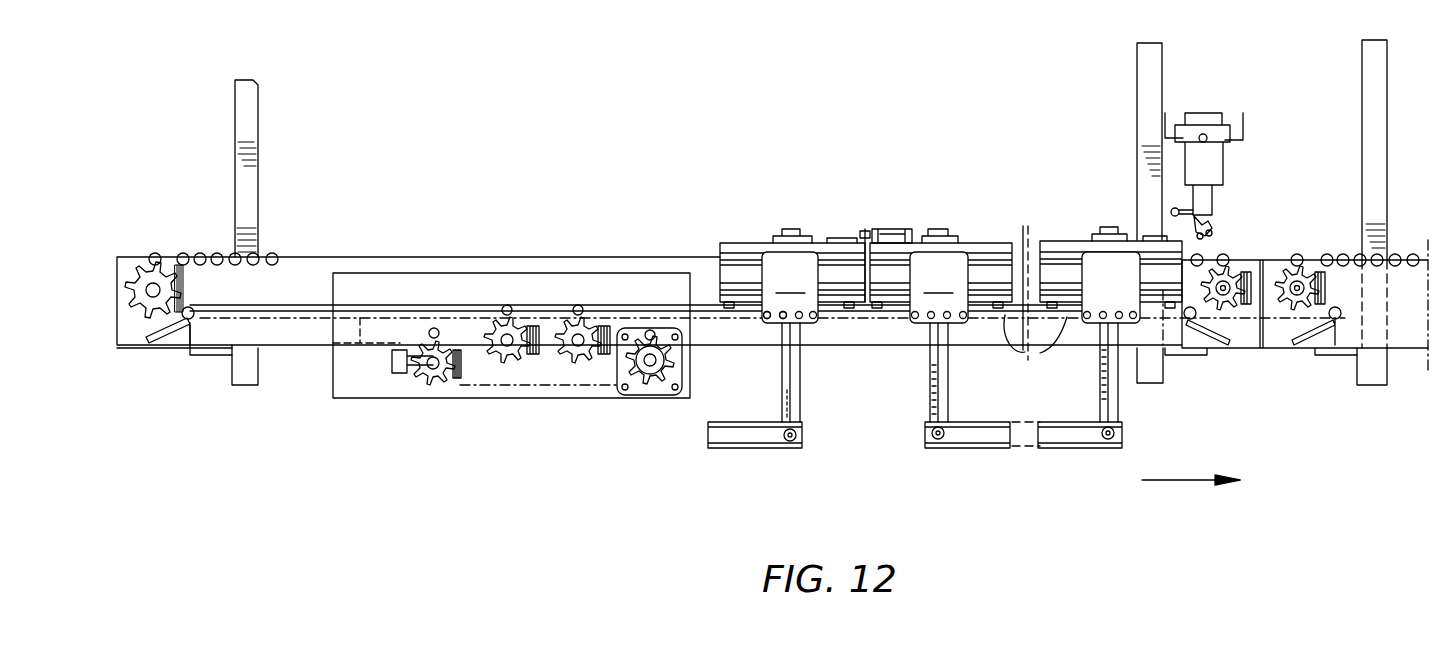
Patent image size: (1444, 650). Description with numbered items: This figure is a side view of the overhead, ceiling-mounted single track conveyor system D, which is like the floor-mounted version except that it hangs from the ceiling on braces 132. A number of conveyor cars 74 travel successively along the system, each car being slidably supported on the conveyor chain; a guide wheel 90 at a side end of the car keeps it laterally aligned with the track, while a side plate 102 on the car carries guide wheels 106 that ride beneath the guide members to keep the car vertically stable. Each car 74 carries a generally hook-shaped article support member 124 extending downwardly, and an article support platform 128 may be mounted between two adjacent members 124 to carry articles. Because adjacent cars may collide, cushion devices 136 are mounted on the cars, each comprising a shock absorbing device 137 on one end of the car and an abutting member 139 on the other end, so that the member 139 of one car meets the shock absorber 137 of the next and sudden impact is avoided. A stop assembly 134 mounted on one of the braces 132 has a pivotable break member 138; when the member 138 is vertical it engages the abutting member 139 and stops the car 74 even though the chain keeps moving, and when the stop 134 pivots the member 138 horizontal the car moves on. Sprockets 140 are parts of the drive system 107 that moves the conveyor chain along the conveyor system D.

The conveyor car 74 is at (823, 243).
The guide wheel 90 is at (1035, 302).
The side plate 102 is at (951, 287).
The guide wheel 106 is at (778, 322).
The drive mechanism 107 is at (365, 400).
The article support member 124 is at (800, 390).
The article support platform 128 is at (1000, 450).
The brace 132 is at (258, 152).
The stop assembly 134 is at (1252, 157).
The cushion device 136 is at (945, 170).
The shock absorbing device 137 is at (900, 228).
The break member 138 is at (1212, 232).
The abutting member 139 is at (866, 232).
The sprocket 140 is at (150, 318).
The conveyor system D is at (585, 185).